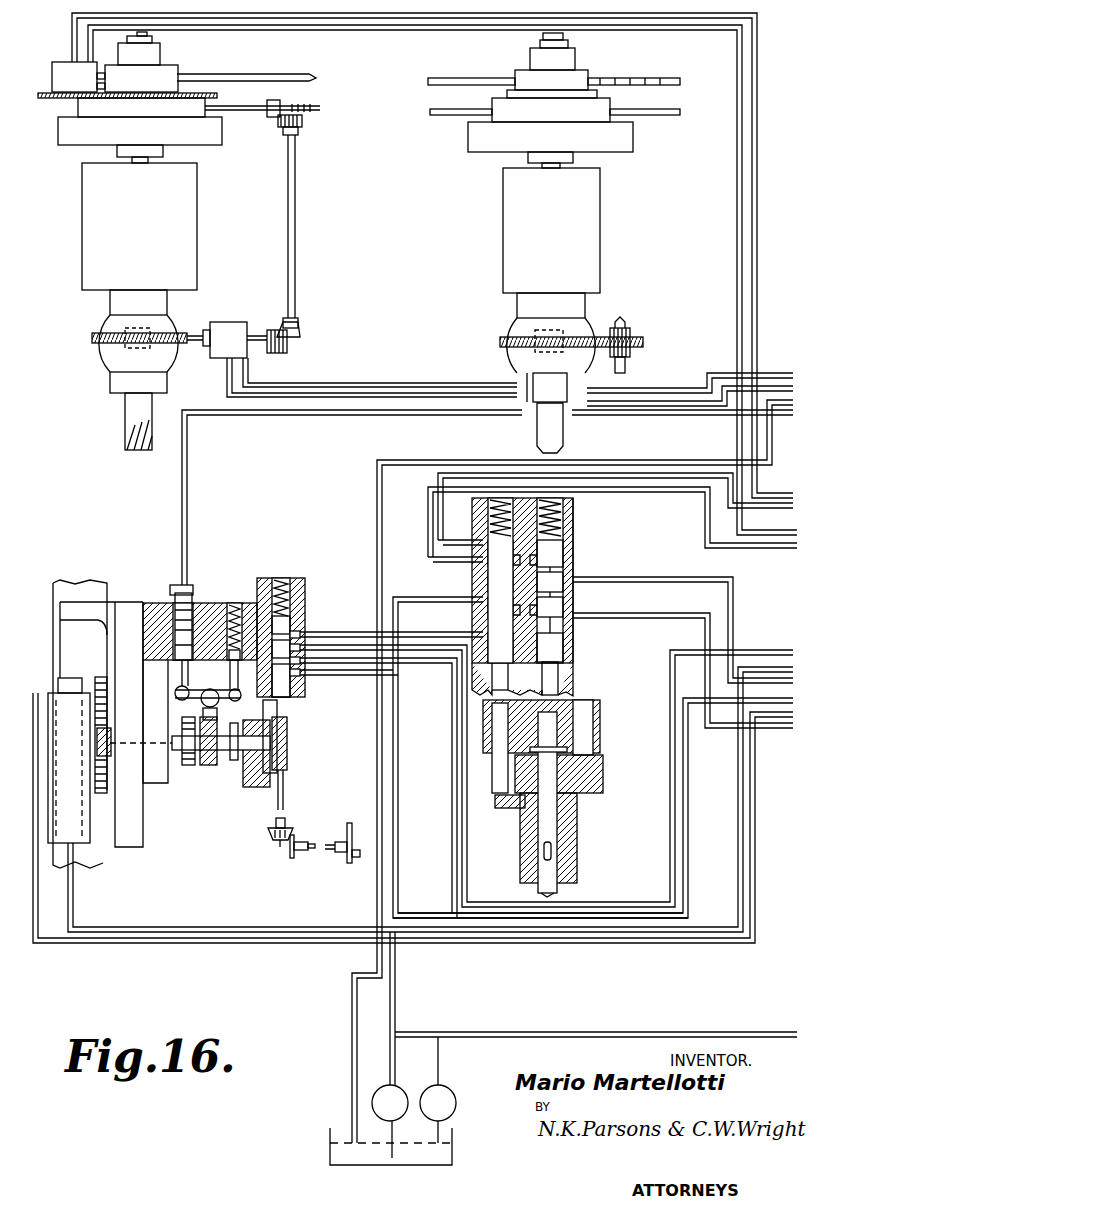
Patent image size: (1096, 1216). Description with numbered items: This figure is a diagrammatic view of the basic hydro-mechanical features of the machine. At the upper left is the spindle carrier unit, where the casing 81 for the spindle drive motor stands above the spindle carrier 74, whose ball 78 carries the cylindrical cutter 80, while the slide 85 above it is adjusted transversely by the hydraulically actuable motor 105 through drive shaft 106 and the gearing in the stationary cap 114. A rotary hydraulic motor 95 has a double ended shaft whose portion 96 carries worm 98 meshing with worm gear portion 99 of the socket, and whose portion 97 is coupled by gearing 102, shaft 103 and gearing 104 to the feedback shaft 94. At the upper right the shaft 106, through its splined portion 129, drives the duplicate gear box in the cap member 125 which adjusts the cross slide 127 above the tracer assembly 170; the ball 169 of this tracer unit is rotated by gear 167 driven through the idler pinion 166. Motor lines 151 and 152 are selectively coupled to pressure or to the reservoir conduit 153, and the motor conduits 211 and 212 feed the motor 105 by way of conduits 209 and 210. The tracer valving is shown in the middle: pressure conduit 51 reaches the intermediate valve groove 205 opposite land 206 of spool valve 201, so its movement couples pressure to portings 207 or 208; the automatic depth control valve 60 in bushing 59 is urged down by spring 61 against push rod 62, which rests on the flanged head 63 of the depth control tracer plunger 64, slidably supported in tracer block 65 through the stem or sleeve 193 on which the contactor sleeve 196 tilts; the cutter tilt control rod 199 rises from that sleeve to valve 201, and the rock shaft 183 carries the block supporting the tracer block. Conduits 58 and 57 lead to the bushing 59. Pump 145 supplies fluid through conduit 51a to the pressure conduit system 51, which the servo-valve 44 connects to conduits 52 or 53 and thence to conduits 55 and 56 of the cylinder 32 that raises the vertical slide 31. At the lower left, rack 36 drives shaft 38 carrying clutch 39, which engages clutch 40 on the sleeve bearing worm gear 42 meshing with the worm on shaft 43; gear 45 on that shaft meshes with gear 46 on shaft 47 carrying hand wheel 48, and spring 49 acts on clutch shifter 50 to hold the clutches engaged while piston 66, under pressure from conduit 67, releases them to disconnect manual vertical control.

The hydraulically actuable motor 105 is at (58, 62).
The stationary cap 114 is at (170, 66).
The drive shaft 106 is at (245, 74).
The slide 85 is at (62, 146).
The casing for the spindle drive motor 81 is at (197, 264).
The feedback shaft 94 is at (248, 111).
The bevel gearing 104 is at (302, 121).
The shaft 103 is at (297, 192).
The spindle carrier 74 is at (110, 301).
The ball 78 is at (104, 364).
The worm gear portion 99 is at (92, 339).
The worm 98 is at (150, 333).
The shaft portion 96 is at (200, 343).
The rotary hydraulic motor 95 is at (247, 353).
The shaft portion 97 is at (262, 330).
The gearing 102 is at (295, 336).
The cylindrical cutter 80 is at (125, 446).
The conduit 67 is at (187, 473).
The cap member 125 is at (575, 72).
The splined portion 129 is at (446, 78).
The cross slide 127 is at (488, 142).
The tracer assembly 170 is at (517, 306).
The ball 169 is at (515, 360).
The gear 167 is at (510, 337).
The idler pinion 166 is at (622, 325).
The contactor sleeve 196 is at (563, 438).
The conduit 151 is at (657, 388).
The conduit 152 is at (758, 380).
The motor conduit 211 is at (758, 312).
The motor conduit 212 is at (737, 264).
The reservoir conduit 153 is at (377, 482).
The conduit 209 is at (471, 472).
The spool valve 201 is at (488, 546).
The conduit 210 is at (428, 583).
The porting 207 is at (483, 568).
The conduit 57 is at (602, 618).
The spring 61 is at (563, 522).
The automatic depth control valve 60 is at (565, 542).
The bushing 59 is at (575, 566).
The conduit 58 is at (648, 578).
The land 206 is at (573, 613).
The push rod 62 is at (573, 679).
The intermediate valve groove 205 is at (470, 603).
The conduit 52 is at (785, 698).
The porting 208 is at (455, 646).
The conduit 53 is at (780, 650).
The conduit 55 is at (745, 665).
The conduit 56 is at (770, 717).
The rock shaft 183 is at (588, 713).
The cutter tilt control rod 199 is at (492, 771).
The tracer block 65 is at (603, 790).
The stem or sleeve 193 is at (525, 830).
The depth control tracer plunger 64 is at (546, 897).
The flanged head 63 is at (568, 750).
The operating pressure conduit system 51 is at (396, 1000).
The conduit 51a is at (555, 1033).
The pump 145 is at (372, 1105).
The servo-valve 44 is at (303, 615).
The piston 66 is at (178, 608).
The clutch shifter 50 is at (194, 600).
The spring 49 is at (232, 607).
The worm gear 42 is at (288, 721).
The shaft 43 is at (283, 706).
The clutch 39 is at (186, 767).
The clutch 40 is at (213, 767).
The rack 36 is at (100, 677).
The cylinder 32 is at (47, 733).
The vertical slide 31 is at (125, 847).
The shaft 38 is at (152, 745).
The gear 45 is at (272, 833).
The gear 46 is at (293, 855).
The shaft 47 is at (332, 852).
The hand wheel 48 is at (345, 822).